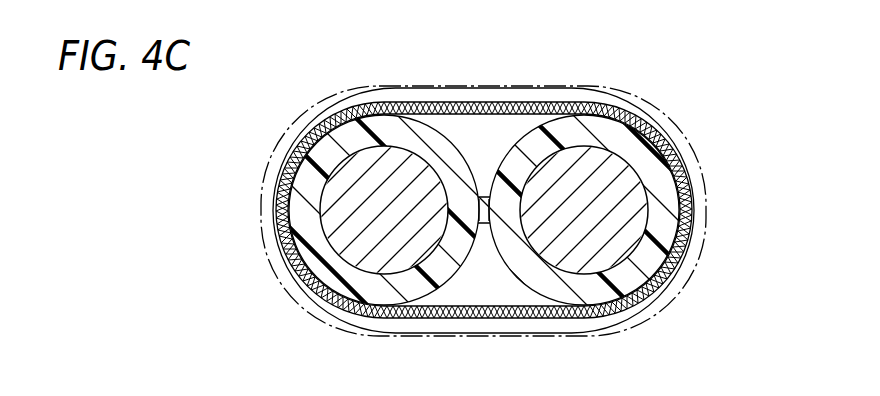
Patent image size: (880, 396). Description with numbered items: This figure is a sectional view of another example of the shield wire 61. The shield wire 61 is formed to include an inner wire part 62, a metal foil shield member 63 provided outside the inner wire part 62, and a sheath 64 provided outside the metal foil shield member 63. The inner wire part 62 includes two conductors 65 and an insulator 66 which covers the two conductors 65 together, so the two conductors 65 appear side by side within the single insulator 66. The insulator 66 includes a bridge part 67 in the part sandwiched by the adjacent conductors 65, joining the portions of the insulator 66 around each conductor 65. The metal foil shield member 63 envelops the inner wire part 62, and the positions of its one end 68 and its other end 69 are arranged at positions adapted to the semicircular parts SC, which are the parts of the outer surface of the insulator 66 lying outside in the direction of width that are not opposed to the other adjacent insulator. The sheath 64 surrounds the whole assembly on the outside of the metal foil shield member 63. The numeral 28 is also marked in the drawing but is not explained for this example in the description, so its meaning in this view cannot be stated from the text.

The shield wire 61 is at (727, 130).
The inner wire part 62 is at (417, 33).
The metal foil shield member 63 is at (677, 258).
The sheath 64 is at (677, 293).
The conductor 65 is at (428, 180).
The insulator 66 is at (515, 167).
The bridge part 67 is at (482, 212).
The one end of the metal foil shield member 68 is at (278, 222).
The other end of the metal foil shield member 69 is at (693, 217).
The shield layer 28 is at (568, 105).
The semicircular part SC is at (305, 138).